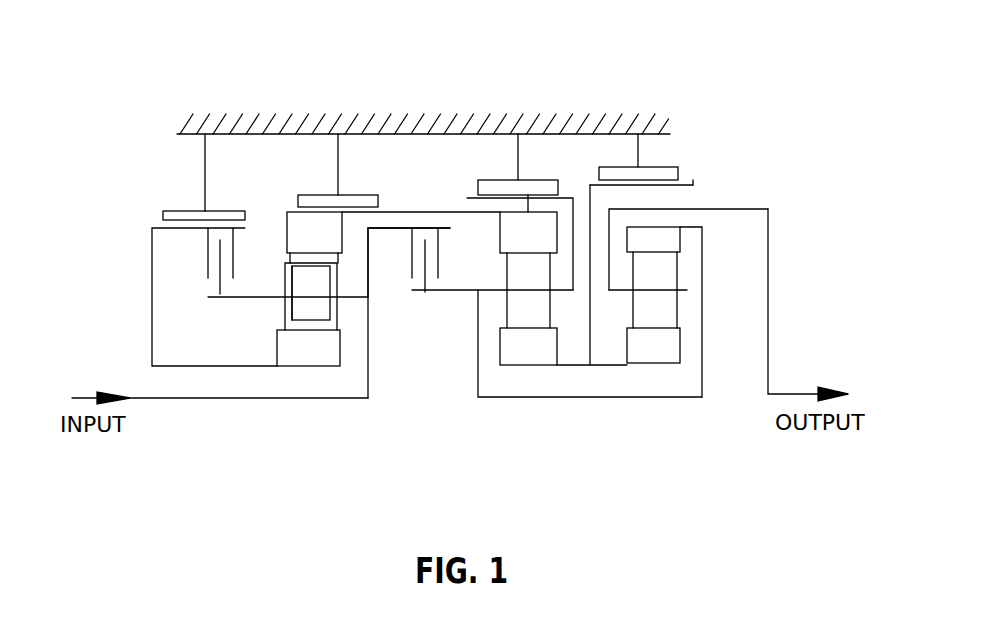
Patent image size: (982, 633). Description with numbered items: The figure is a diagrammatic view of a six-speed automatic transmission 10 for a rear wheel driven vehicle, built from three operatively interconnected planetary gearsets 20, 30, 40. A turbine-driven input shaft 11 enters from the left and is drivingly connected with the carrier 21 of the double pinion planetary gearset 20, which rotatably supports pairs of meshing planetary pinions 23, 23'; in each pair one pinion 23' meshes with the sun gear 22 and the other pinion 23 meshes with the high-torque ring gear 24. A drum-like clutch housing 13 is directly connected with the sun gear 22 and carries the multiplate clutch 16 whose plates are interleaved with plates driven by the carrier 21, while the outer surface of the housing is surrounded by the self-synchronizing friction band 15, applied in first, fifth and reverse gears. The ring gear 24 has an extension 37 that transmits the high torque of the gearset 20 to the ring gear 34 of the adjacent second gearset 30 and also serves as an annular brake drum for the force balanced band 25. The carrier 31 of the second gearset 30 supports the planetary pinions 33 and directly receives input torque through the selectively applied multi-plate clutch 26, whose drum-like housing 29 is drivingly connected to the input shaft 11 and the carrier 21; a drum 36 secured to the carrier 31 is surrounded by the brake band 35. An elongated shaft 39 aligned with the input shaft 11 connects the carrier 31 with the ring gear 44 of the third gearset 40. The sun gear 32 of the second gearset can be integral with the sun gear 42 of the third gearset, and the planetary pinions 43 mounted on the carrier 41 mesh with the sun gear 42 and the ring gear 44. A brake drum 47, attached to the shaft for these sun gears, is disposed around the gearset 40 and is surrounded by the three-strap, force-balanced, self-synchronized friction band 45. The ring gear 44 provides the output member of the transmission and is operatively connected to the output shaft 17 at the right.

The six-speed transmission 10 is at (112, 160).
The input shaft 11 is at (163, 398).
The clutch housing 13 is at (152, 249).
The friction band 15 is at (177, 213).
The multiplate clutch 16 is at (212, 261).
The output shaft 17 is at (163, 220).
The double pinion planetary gearset 20 is at (316, 442).
The carrier 21 is at (255, 297).
The sun gear 22 is at (283, 340).
The planetary pinion 23 is at (343, 381).
The planetary pinion 23' is at (280, 381).
The ring gear 24 is at (297, 218).
The force balanced band 25 is at (315, 200).
The multi-plate clutch 26 is at (427, 233).
The clutch housing 29 is at (393, 227).
The second gearset 30 is at (538, 442).
The carrier 31 is at (493, 292).
The sun gear 32 is at (512, 352).
The planetary pinions 33 is at (540, 318).
The ring gear 34 is at (530, 213).
The brake band 35 is at (508, 185).
The drum 36 is at (570, 198).
The extension 37 is at (453, 210).
The elongated shaft 39 is at (592, 396).
The third gearset 40 is at (663, 442).
The carrier 41 is at (622, 292).
The sun gear 42 is at (672, 357).
The planetary pinions 43 is at (655, 273).
The ring gear 44 is at (672, 233).
The friction band 45 is at (620, 173).
The brake drum 47 is at (693, 185).